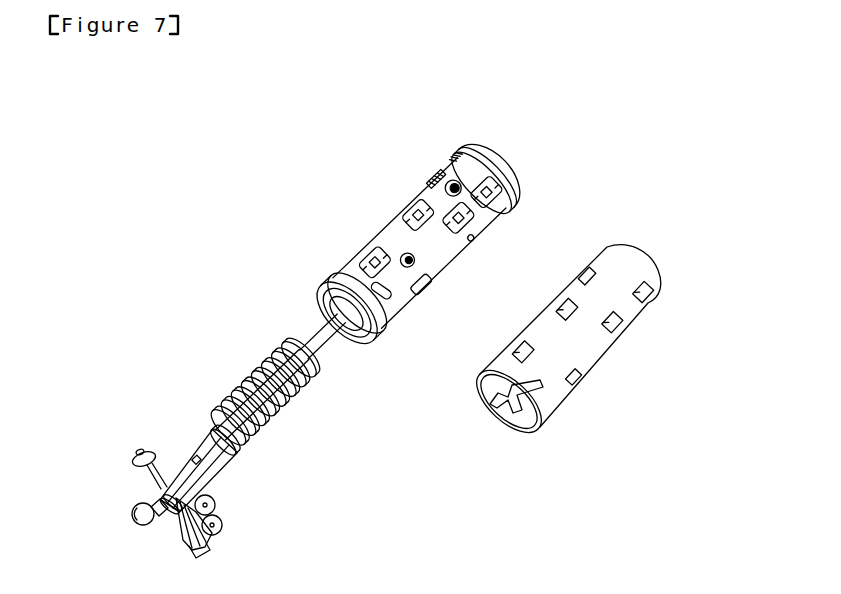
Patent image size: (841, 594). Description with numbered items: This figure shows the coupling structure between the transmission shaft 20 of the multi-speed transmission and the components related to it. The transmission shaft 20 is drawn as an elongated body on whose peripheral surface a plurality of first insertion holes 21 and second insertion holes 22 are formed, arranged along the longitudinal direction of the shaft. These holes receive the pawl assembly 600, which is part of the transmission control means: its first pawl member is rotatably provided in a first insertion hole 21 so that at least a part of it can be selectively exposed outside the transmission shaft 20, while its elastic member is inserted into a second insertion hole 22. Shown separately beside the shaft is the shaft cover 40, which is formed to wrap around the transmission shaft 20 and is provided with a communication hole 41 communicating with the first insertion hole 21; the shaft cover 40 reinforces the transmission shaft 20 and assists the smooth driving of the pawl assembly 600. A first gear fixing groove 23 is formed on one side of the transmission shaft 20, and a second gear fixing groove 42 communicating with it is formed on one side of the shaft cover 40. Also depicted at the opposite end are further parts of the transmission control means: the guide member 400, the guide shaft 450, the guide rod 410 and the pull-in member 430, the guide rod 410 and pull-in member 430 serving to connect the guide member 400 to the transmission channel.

The transmission shaft 20 is at (385, 230).
The first insertion hole 21 is at (363, 247).
The second insertion hole 22 is at (405, 250).
The first gear fixing groove 23 is at (330, 283).
The pawl assembly 600 is at (416, 198).
The shaft cover 40 is at (622, 262).
The communication hole 41 is at (648, 280).
The second gear fixing groove 42 is at (493, 407).
The guide member 400 is at (225, 402).
The guide shaft 450 is at (199, 464).
The guide rod 410 is at (170, 472).
The pull-in member 430 is at (220, 527).